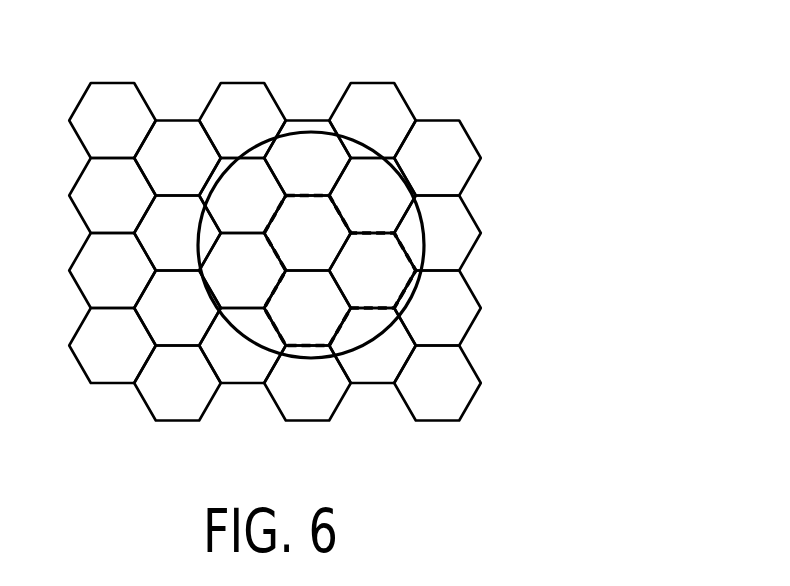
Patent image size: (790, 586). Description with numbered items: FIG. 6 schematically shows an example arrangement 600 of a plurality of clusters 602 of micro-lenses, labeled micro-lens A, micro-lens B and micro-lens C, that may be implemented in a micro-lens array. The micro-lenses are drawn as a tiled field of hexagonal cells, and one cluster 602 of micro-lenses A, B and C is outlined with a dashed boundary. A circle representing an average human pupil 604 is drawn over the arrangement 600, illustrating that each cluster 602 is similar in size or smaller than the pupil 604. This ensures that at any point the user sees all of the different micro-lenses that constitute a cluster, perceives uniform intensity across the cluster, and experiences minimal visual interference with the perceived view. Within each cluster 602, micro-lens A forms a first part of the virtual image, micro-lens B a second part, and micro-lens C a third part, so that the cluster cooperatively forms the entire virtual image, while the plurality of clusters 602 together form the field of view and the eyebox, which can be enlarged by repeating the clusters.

The arrangement 600 is at (562, 50).
The cluster 602 is at (406, 257).
The average human pupil 604 is at (373, 148).